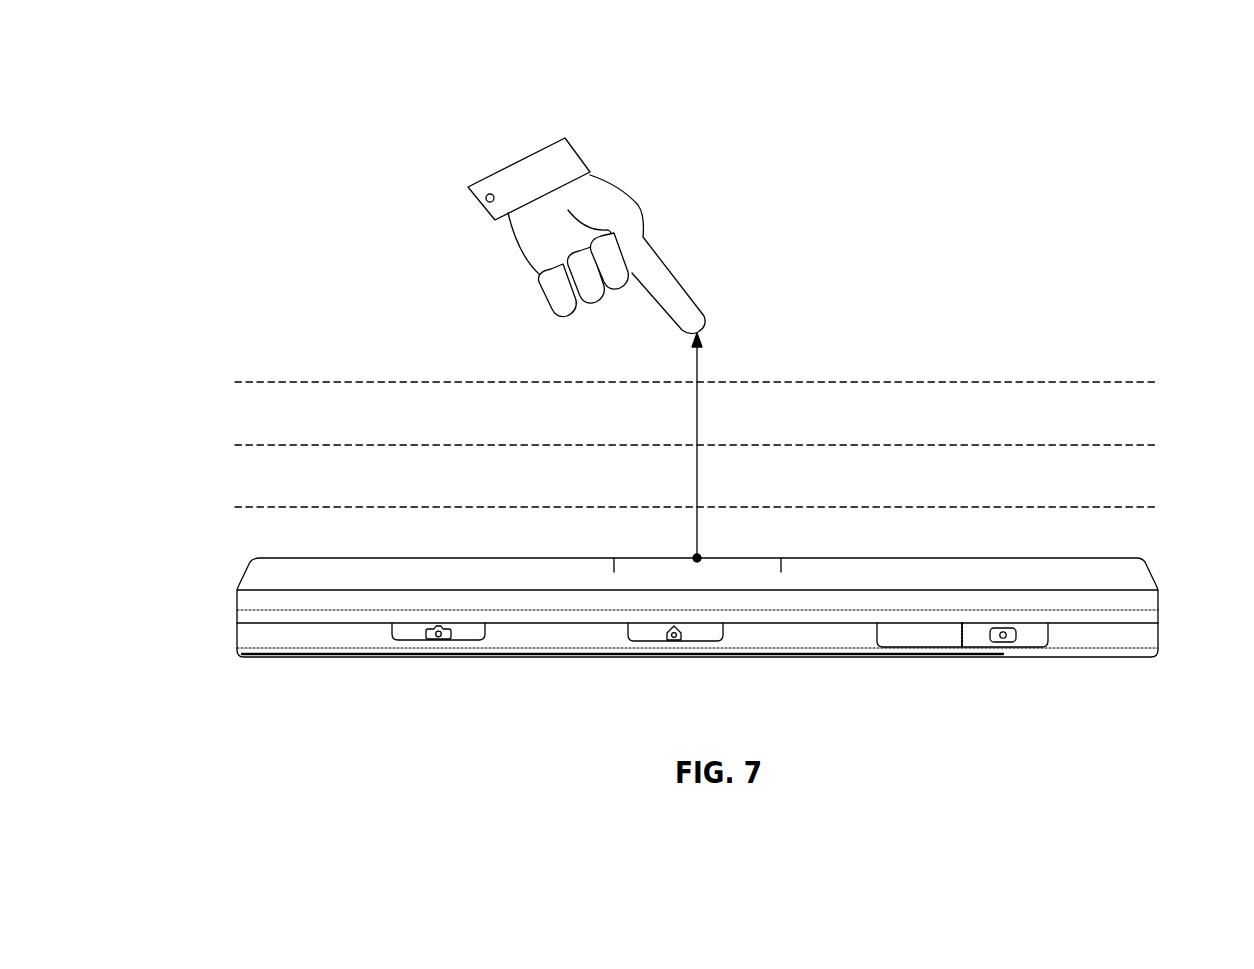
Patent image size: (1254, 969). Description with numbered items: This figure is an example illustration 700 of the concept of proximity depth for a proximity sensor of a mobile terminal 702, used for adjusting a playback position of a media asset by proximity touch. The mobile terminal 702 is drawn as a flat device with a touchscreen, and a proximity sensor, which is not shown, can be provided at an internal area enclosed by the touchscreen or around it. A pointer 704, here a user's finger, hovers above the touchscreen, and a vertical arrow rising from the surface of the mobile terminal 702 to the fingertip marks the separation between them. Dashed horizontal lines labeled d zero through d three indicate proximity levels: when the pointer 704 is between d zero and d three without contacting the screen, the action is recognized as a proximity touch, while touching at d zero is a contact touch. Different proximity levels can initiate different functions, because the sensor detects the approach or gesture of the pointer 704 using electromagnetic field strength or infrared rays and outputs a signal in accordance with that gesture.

The proximity-based interaction scenario 700 is at (183, 72).
The mobile terminal 702 is at (1160, 637).
The pointer 704 is at (602, 182).